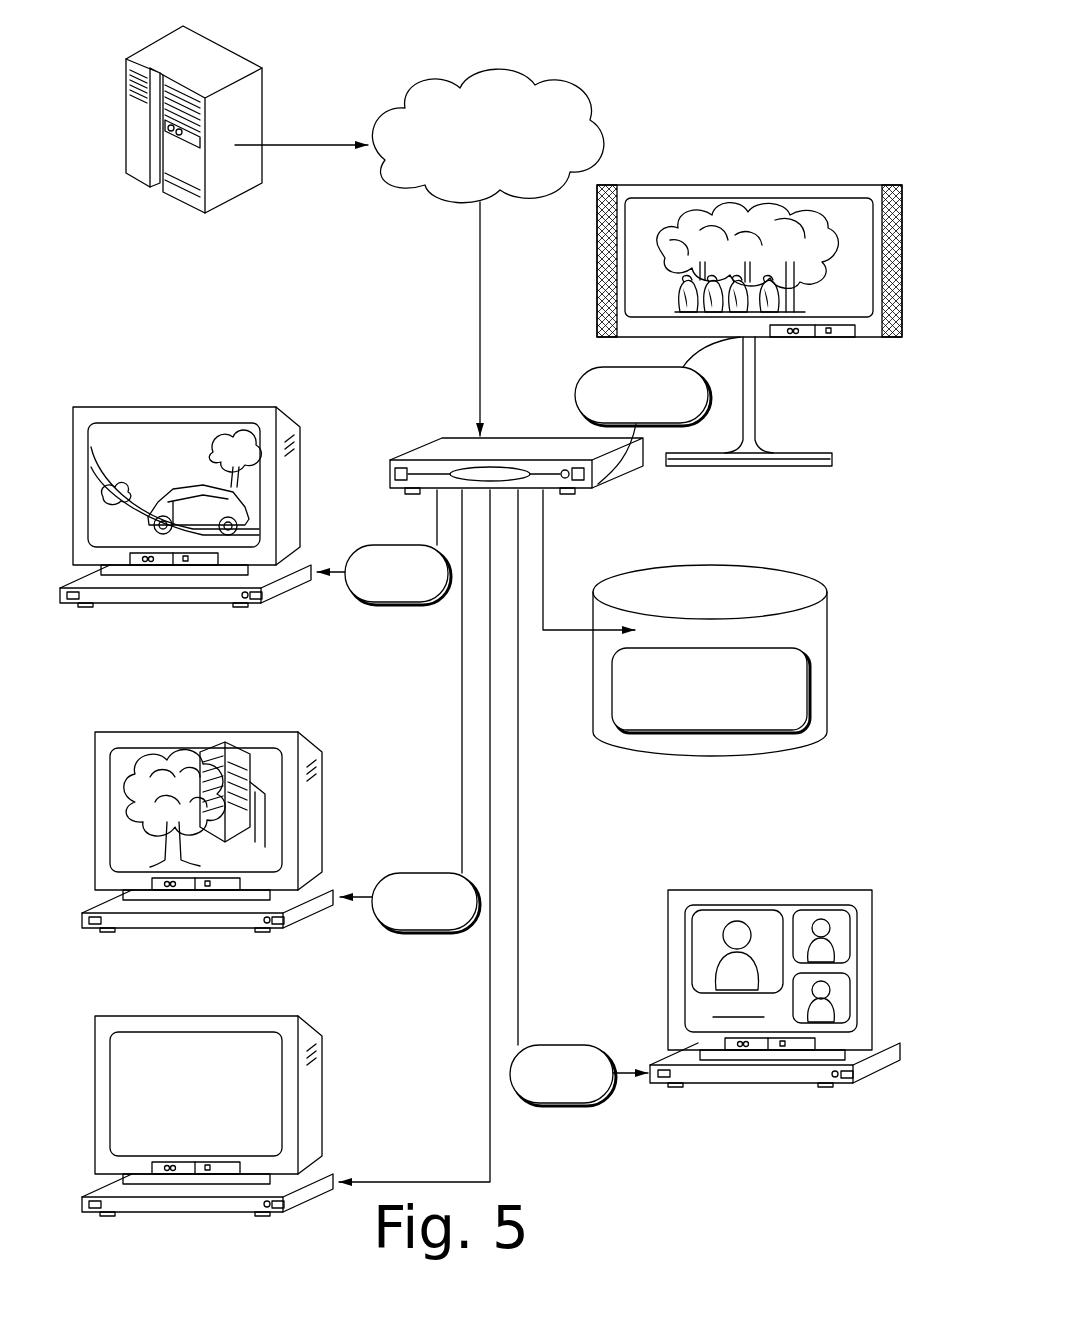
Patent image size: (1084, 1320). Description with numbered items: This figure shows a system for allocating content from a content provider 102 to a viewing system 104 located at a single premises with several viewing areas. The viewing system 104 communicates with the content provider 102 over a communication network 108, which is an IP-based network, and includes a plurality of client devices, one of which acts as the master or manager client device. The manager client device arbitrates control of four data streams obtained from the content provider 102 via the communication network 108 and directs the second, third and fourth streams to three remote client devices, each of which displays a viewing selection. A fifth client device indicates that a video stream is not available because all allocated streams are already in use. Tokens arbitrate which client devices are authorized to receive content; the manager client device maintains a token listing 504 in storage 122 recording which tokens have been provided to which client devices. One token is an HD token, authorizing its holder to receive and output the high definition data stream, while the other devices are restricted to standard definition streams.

The content provider 102 is at (174, 274).
The communication network 108 is at (467, 186).
The viewing system 104 is at (425, 332).
The storage 122 is at (691, 637).
The token listing 504 is at (691, 710).